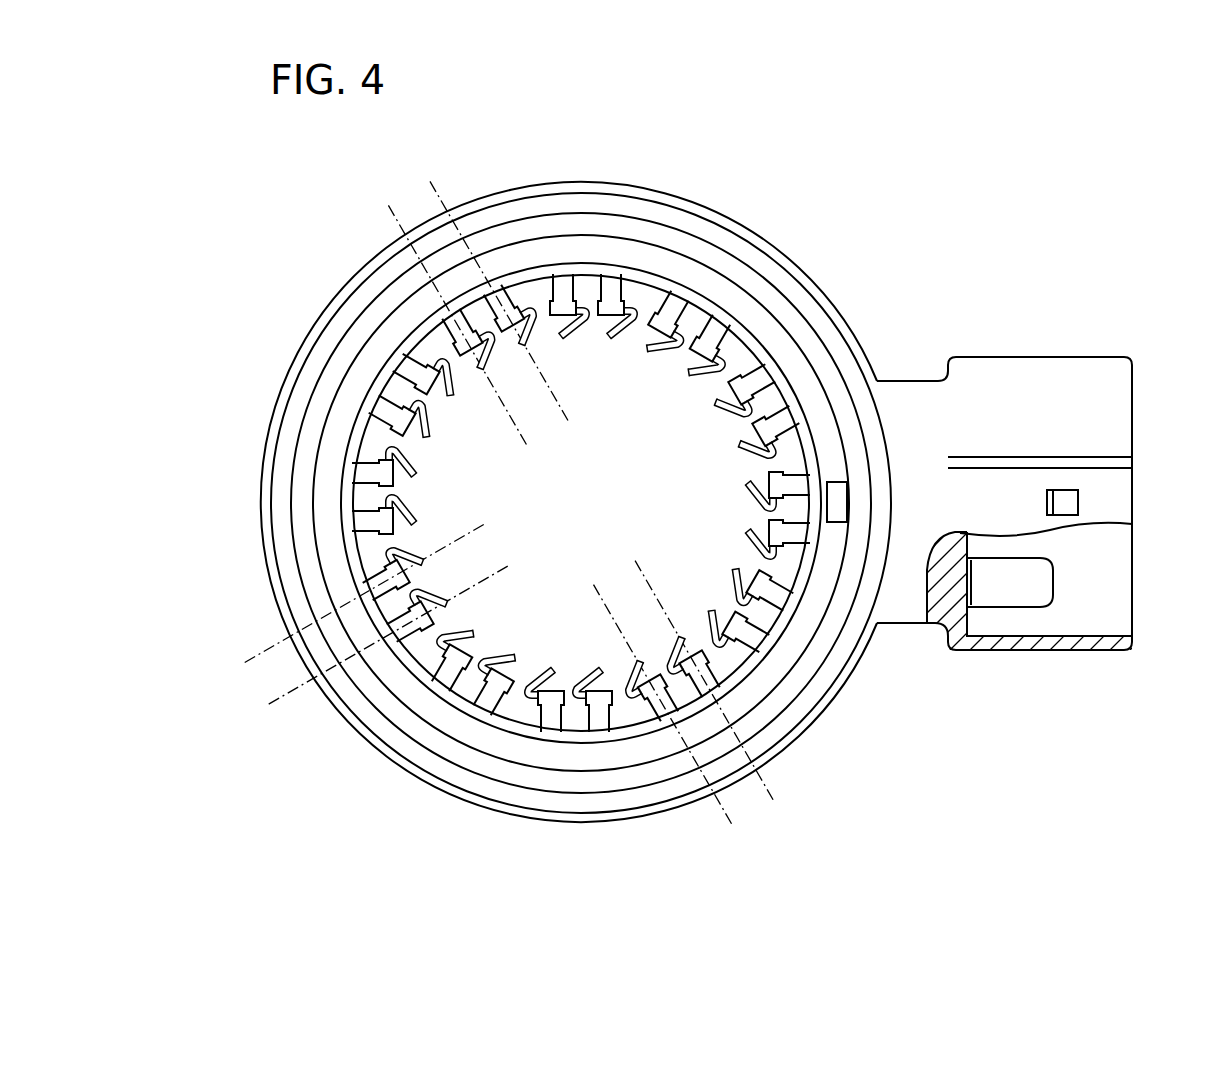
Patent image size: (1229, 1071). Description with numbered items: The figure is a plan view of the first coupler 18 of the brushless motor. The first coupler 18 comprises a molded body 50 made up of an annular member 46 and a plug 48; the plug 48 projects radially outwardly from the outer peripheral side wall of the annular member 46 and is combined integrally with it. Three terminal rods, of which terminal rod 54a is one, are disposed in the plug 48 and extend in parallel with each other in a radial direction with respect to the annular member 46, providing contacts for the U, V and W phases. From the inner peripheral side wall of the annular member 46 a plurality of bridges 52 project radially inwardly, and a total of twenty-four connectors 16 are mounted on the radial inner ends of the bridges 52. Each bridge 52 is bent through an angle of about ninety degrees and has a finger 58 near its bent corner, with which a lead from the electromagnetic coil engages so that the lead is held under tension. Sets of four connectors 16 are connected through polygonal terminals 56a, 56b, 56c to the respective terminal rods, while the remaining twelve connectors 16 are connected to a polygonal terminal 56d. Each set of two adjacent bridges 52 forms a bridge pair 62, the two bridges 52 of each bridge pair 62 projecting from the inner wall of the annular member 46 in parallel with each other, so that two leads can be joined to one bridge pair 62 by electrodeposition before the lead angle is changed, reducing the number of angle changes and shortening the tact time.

The first coupler 18 is at (320, 169).
The connector 16 is at (581, 594).
The annular member 46 is at (690, 201).
The plug 48 is at (1117, 403).
The molded body 50 is at (902, 393).
The bridge 52 is at (553, 508).
The terminal rod 54a is at (1042, 590).
The polygonal terminal 56a is at (320, 355).
The polygonal terminal 56b is at (342, 382).
The polygonal terminal 56c is at (320, 322).
The polygonal terminal 56d is at (360, 415).
The finger 58 is at (428, 411).
The bridge pair 62 is at (925, 718).